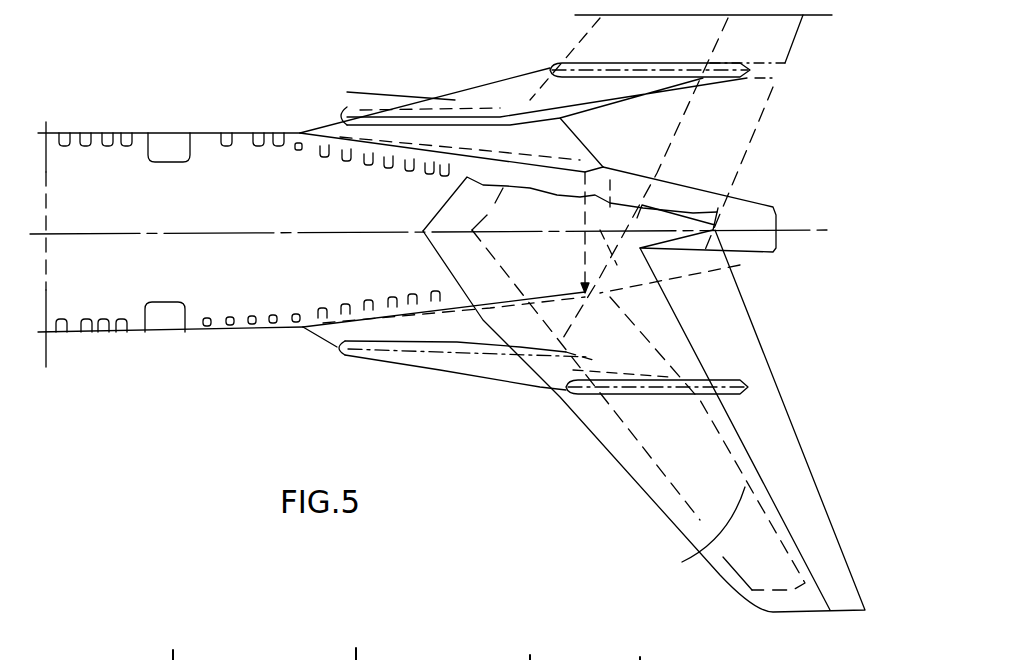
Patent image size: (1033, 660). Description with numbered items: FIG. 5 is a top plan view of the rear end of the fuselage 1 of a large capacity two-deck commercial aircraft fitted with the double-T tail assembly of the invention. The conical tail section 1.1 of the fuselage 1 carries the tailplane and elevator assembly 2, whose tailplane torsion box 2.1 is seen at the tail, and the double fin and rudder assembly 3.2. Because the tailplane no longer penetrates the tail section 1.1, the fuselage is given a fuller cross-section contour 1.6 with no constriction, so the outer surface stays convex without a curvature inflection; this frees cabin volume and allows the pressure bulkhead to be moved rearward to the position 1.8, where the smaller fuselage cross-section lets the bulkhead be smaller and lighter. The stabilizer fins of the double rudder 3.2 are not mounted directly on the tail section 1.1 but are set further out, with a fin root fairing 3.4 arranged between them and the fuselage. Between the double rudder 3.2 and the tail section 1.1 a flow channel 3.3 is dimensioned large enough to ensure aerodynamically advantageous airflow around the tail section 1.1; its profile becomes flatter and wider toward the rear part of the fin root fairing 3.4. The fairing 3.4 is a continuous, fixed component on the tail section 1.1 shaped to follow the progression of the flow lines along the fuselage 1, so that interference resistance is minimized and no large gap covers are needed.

The fuselage 1 is at (118, 172).
The tail section 1.1 is at (763, 273).
The fuselage contour 1.6 is at (560, 143).
The repositioned pressure bulkhead 1.8 is at (600, 275).
The tailplane and elevator assembly 2 is at (650, 488).
The tailplane torsion box 2.1 is at (682, 562).
The double fin and rudder assembly 3.2 is at (490, 370).
The flow channel 3.3 is at (473, 143).
The fin root fairing 3.4 is at (340, 327).